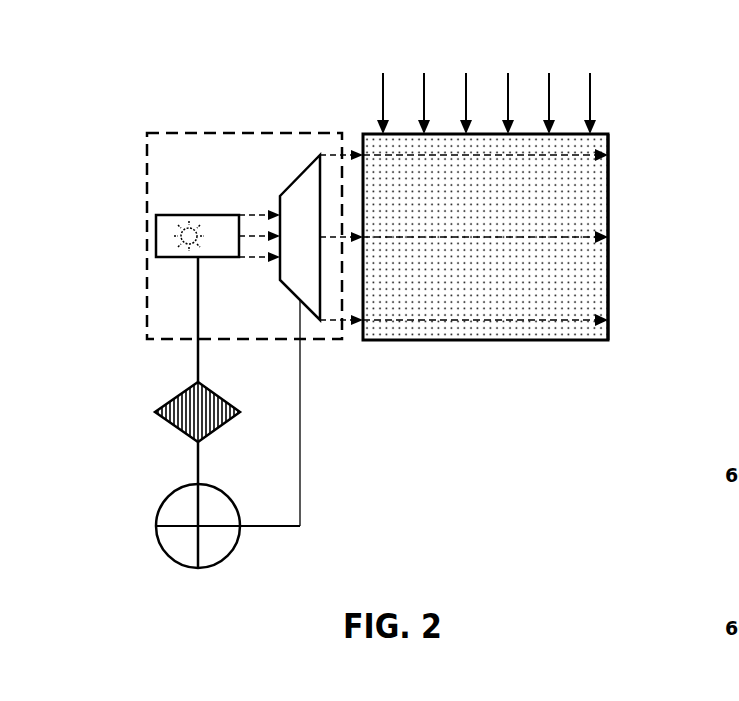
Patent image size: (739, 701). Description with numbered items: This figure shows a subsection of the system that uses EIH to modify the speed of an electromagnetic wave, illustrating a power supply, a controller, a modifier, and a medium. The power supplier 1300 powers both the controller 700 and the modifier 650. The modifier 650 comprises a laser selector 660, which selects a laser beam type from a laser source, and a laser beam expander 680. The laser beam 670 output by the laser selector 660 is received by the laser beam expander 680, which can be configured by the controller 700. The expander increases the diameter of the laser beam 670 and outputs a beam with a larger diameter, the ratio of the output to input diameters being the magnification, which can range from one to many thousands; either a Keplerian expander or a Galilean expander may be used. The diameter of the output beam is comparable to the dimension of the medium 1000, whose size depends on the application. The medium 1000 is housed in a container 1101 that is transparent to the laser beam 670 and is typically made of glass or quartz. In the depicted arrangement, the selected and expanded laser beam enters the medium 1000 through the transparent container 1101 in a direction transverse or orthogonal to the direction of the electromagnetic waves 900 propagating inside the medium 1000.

The modifier 650 is at (201, 220).
The laser selector 660 is at (149, 218).
The laser beam 670 is at (240, 205).
The laser beam expander 680 is at (307, 214).
The controller 700 is at (144, 401).
The power supplier 1300 is at (137, 516).
The electromagnetic waves 900 is at (545, 95).
The medium 1000 is at (541, 237).
The container 1101 is at (671, 237).